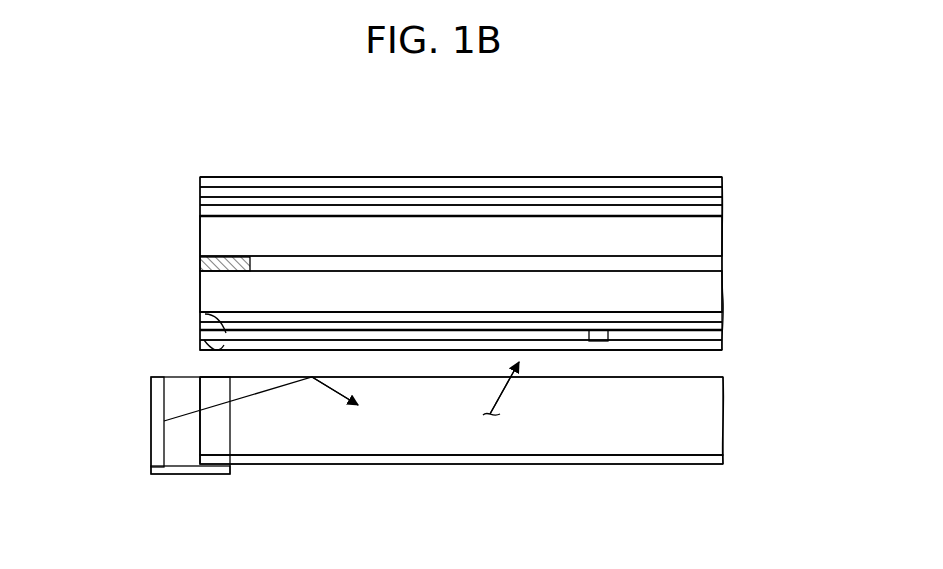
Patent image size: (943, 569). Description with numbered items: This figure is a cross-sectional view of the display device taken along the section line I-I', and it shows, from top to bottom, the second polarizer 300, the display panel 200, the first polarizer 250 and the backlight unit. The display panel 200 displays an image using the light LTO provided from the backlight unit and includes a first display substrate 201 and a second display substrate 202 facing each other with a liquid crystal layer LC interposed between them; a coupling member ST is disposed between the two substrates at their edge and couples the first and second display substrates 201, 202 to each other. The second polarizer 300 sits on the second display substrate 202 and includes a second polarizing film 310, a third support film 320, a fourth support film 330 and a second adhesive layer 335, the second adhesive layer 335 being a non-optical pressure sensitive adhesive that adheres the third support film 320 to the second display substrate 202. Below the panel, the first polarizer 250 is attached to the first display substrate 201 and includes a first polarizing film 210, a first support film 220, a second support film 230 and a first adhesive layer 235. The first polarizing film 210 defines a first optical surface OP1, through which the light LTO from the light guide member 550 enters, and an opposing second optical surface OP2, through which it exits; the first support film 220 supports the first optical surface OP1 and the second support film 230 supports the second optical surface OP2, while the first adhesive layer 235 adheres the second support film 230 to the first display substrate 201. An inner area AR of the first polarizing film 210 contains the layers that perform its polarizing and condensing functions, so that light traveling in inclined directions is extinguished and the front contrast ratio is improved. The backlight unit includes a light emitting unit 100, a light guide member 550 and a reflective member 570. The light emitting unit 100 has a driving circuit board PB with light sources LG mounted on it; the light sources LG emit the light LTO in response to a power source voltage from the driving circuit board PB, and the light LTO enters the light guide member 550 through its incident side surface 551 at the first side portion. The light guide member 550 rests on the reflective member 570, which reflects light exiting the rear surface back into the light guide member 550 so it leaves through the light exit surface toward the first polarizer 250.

The fourth support film 330 is at (722, 181).
The second polarizing film 310 is at (722, 191).
The third support film 320 is at (722, 201).
The second adhesive layer 335 is at (722, 211).
The second polarizer 300 is at (803, 147).
The second display substrate 202 is at (722, 243).
The liquid crystal layer LC is at (722, 264).
The first display substrate 201 is at (722, 285).
The display panel 200 is at (803, 238).
The coupling member ST is at (203, 263).
The first adhesive layer 235 is at (722, 318).
The second support film 230 is at (722, 326).
The first polarizing film 210 is at (722, 336).
The first support film 220 is at (722, 346).
The first polarizer 250 is at (803, 303).
The inner area AR is at (608, 341).
The second optical surface OP2 is at (205, 314).
The first optical surface OP1 is at (204, 340).
The light guide member 550 is at (712, 420).
The reflective member 570 is at (712, 459).
The incident side surface 551 is at (200, 384).
The light source LG is at (151, 420).
The driving circuit board PB is at (150, 470).
The light emitting unit 100 is at (85, 410).
The light output LTO is at (333, 393).
The section line I-I' I is at (147, 487).
The section line I- I' is at (723, 487).